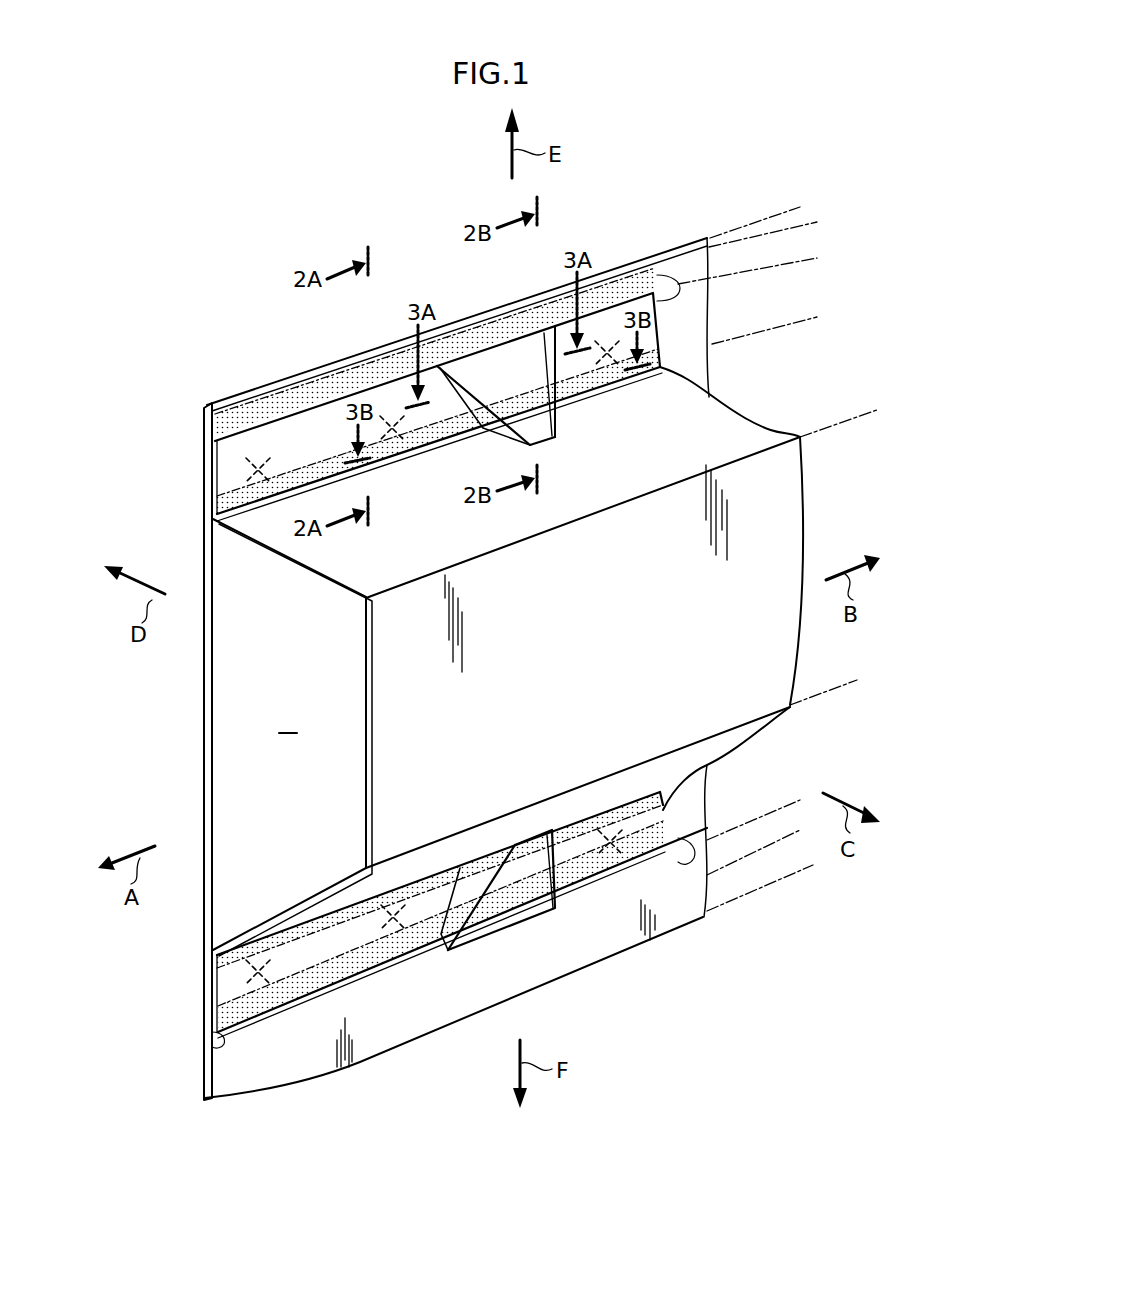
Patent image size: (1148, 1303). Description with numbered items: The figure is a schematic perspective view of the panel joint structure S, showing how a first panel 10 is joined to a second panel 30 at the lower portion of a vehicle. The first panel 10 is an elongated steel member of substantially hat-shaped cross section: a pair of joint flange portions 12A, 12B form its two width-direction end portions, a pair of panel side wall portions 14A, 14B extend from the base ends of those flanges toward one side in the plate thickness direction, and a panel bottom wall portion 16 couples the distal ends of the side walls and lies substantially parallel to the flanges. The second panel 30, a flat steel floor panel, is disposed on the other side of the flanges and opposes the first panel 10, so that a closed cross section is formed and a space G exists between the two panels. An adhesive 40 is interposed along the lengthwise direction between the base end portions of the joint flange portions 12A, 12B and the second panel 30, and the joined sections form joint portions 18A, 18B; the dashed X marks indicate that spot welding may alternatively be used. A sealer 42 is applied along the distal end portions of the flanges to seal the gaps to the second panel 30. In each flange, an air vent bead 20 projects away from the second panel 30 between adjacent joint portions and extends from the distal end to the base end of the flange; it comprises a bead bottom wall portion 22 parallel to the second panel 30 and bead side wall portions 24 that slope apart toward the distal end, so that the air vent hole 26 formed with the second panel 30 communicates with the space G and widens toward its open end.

The first panel 10 is at (791, 434).
The joint flange portion 12A is at (656, 355).
The joint flange portion 12B is at (645, 845).
The panel side wall portion 14A is at (696, 395).
The panel side wall portion 14B is at (730, 745).
The panel bottom wall portion 16 is at (783, 498).
The joint portion 18A is at (238, 512).
The joint portion 18B is at (223, 955).
The air vent bead 20 is at (574, 429).
The bead bottom wall portion 22 is at (538, 430).
The bead side wall portion 24 is at (500, 432).
The air vent hole 26 is at (490, 350).
The second panel 30 is at (200, 741).
The adhesive 40 is at (262, 515).
The sealer 42 is at (303, 397).
The panel joint structure S is at (834, 232).
The space G is at (288, 722).